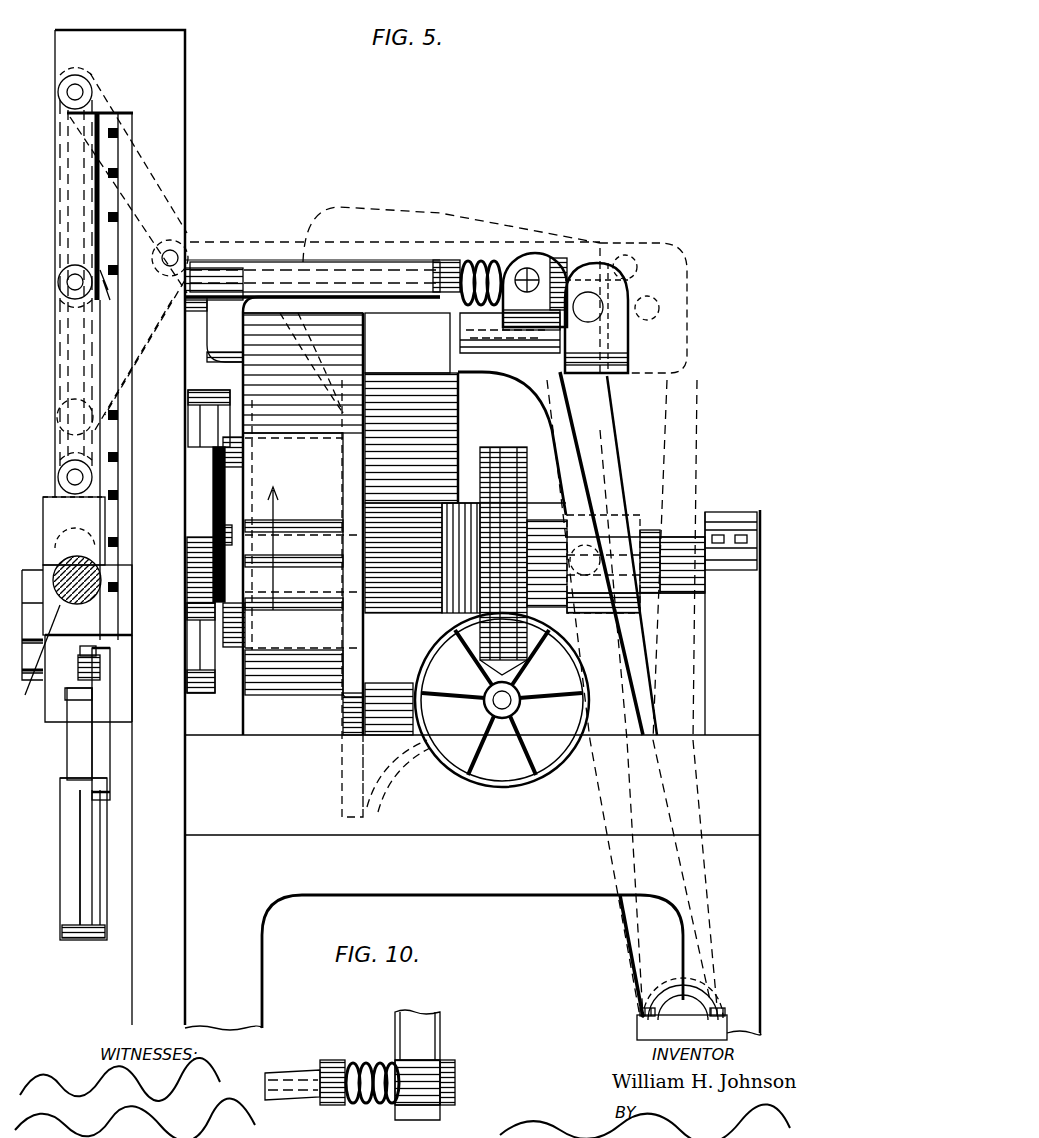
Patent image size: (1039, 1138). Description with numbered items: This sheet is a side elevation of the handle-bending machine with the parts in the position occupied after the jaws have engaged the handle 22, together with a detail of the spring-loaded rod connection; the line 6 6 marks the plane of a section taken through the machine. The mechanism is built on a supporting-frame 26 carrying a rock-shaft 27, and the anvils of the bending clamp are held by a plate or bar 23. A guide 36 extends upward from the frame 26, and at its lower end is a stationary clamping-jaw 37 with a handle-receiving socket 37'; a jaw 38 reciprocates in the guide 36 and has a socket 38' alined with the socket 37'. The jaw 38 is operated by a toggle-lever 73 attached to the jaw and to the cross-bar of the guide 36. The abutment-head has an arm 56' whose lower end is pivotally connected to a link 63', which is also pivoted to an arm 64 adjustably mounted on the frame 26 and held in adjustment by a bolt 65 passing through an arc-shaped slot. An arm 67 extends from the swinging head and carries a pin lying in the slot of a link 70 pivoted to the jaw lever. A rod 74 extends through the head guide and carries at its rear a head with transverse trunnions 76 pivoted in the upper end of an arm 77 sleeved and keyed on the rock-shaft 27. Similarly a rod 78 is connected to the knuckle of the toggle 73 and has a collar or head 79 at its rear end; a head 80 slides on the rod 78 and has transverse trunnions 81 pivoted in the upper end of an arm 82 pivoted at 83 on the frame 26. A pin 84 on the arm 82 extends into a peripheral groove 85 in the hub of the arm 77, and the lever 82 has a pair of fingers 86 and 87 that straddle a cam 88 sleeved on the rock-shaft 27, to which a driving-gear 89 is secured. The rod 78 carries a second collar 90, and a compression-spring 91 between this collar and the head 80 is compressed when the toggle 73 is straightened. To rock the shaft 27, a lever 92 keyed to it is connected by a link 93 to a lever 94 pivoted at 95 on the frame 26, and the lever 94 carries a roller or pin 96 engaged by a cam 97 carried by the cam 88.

In FIG. 5, the section line 6 6 is at (85, 13).
In FIG. 5, the handle 22 is at (88, 595).
In FIG. 5, the plate or bar 23 is at (32, 625).
In FIG. 5, the supporting-frame 26 is at (408, 532).
In FIG. 5, the rock-shaft 27 is at (668, 595).
In FIG. 5, the guide 36 is at (129, 251).
In FIG. 5, the stationary clamping-jaw 37 is at (87, 600).
In FIG. 5, the handle-receiving socket 37' is at (37, 662).
In FIG. 5, the jaw 38 is at (74, 531).
In FIG. 5, the handle-receiving socket 38' is at (75, 538).
In FIG. 5, the arm 56' is at (124, 857).
In FIG. 5, the link 63' is at (114, 859).
In FIG. 5, the arm 64 is at (100, 764).
In FIG. 5, the bolt 65 is at (100, 668).
In FIG. 5, the arm 67 is at (88, 678).
In FIG. 5, the link 70 is at (80, 734).
In FIG. 5, the toggle-lever 73 is at (82, 403).
In FIG. 5, the rod 74 is at (245, 268).
In FIG. 5, the transverse trunnions 76 is at (596, 318).
In FIG. 5, the arm 77 is at (600, 443).
In FIG. 5, the rod 78 is at (205, 270).
In FIG. 5, the collar or head 79 is at (540, 275).
In FIG. 10, the collar or head 79 is at (455, 1085).
In FIG. 5, the head 80 is at (545, 255).
In FIG. 10, the head 80 is at (425, 1080).
In FIG. 5, the transverse trunnions 81 is at (516, 323).
In FIG. 5, the arm 82 is at (555, 352).
In FIG. 5, the pivot 83 is at (686, 1027).
In FIG. 5, the pin 84 is at (580, 530).
In FIG. 5, the peripheral groove 85 is at (583, 613).
In FIG. 5, the finger 86 is at (350, 516).
In FIG. 5, the finger 87 is at (214, 329).
In FIG. 5, the cam 88 is at (437, 470).
In FIG. 5, the driving-gear 89 is at (506, 455).
In FIG. 5, the second collar 90 is at (440, 275).
In FIG. 10, the second collar 90 is at (335, 1080).
In FIG. 5, the compression-spring 91 is at (475, 262).
In FIG. 10, the compression-spring 91 is at (363, 1103).
In FIG. 5, the lever 92 is at (210, 490).
In FIG. 5, the link 93 is at (198, 430).
In FIG. 5, the lever 94 is at (210, 619).
In FIG. 5, the pivot 95 is at (190, 580).
In FIG. 5, the roller or pin 96 is at (231, 641).
In FIG. 5, the cam 97 is at (237, 520).